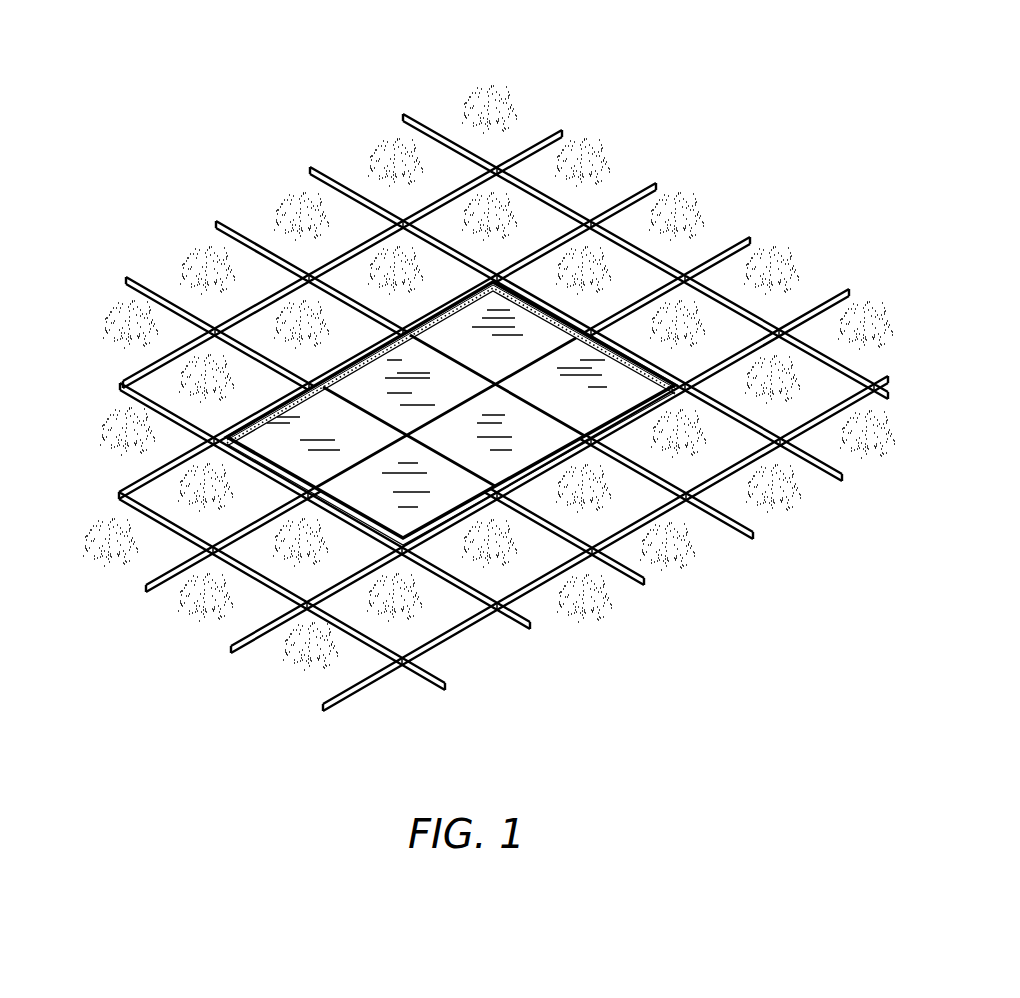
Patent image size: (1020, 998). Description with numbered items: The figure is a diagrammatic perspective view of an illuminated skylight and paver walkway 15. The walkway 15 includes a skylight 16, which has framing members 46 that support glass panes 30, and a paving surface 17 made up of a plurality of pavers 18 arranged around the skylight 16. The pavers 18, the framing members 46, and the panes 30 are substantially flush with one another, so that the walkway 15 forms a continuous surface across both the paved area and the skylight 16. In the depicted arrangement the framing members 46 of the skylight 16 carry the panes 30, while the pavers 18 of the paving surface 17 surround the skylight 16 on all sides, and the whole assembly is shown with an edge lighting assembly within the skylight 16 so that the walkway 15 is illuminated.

The illuminated skylight and paver walkway 15 is at (461, 358).
The skylight 16 is at (413, 263).
The paving surface 17 is at (755, 181).
The pavers 18 is at (639, 279).
The glass panes 30 is at (547, 438).
The framing members 46 is at (237, 457).